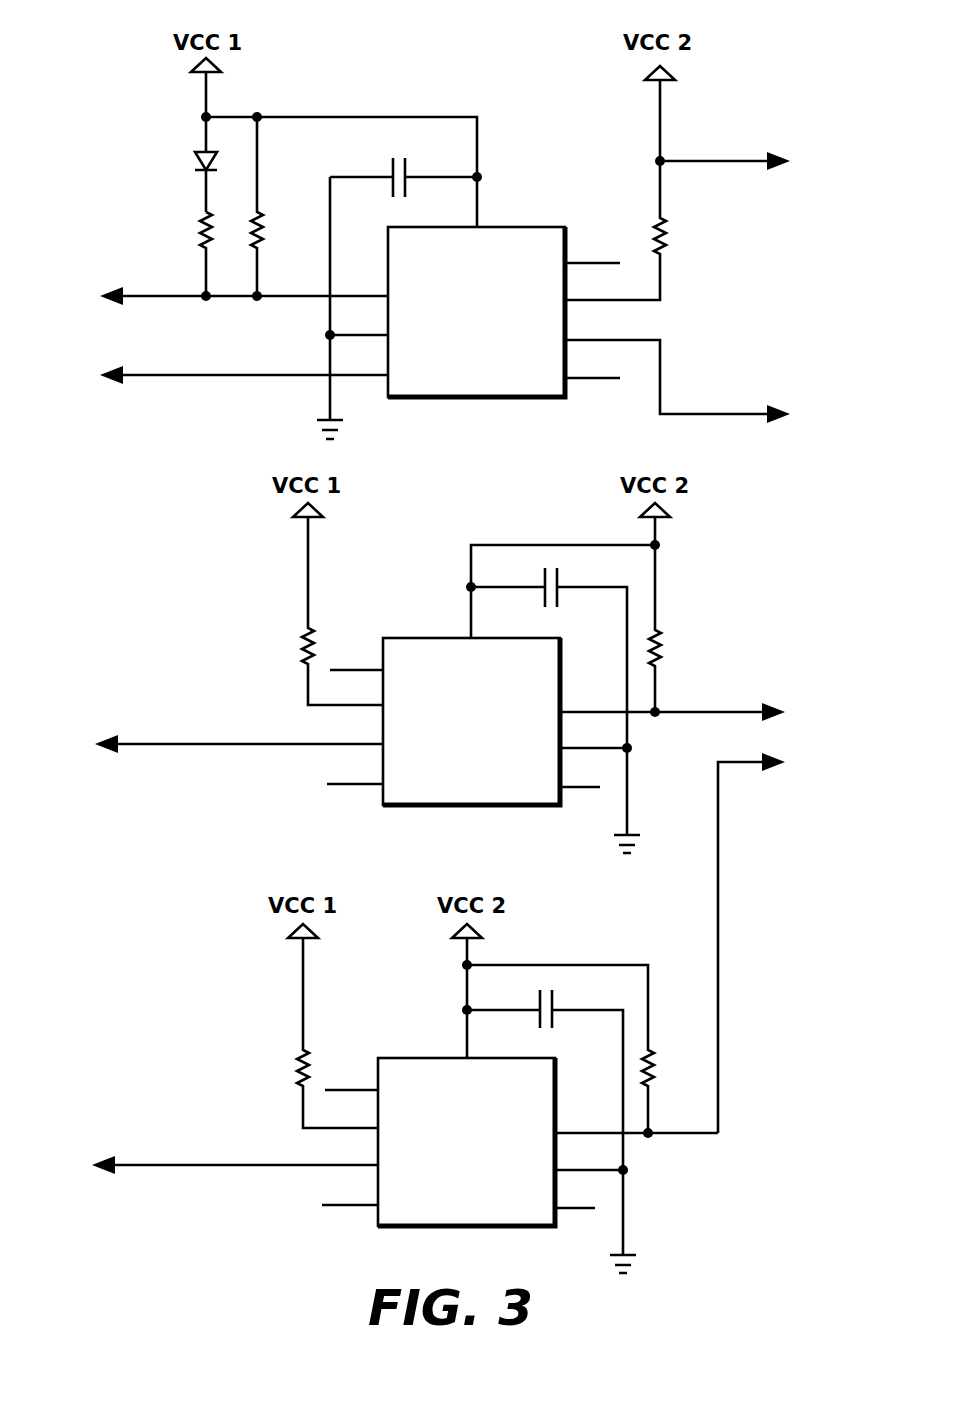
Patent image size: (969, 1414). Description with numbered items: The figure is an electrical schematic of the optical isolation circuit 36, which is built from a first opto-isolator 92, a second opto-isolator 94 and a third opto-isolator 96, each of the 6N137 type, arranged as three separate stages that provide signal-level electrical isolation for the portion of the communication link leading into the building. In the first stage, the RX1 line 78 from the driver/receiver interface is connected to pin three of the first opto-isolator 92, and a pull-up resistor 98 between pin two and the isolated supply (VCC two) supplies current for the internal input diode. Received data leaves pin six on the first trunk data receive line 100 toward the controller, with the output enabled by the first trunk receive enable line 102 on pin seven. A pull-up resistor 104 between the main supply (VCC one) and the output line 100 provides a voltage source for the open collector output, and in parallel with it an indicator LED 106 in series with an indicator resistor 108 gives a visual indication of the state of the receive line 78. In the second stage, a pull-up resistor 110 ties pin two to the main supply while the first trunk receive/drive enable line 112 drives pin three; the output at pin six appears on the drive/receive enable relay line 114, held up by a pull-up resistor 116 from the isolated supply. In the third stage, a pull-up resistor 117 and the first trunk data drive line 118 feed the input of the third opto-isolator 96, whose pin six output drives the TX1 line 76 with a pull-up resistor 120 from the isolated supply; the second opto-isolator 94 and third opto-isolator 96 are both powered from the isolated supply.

The optical isolation circuit 36 is at (536, 98).
The indicator LED 106 is at (196, 152).
The resistor 108 is at (199, 232).
The pull-up resistor 104 is at (259, 222).
The first trunk data receive line 100 is at (168, 292).
The first trunk receive enable line 102 is at (168, 378).
The first opto-isolator 92 is at (455, 367).
The pull-up resistor 98 is at (668, 238).
The RX1 line 78 is at (722, 412).
The pull-up resistor 110 is at (299, 650).
The first trunk receive/drive enable line 112 is at (178, 747).
The second opto-isolator 94 is at (448, 772).
The pull-up resistor 116 is at (663, 648).
The drive/receive enable relay line 114 is at (718, 712).
The TX1 line 76 is at (742, 765).
The pull-up resistor 117 is at (295, 1072).
The first trunk data drive line 118 is at (200, 1168).
The third opto-isolator 96 is at (490, 1215).
The pull-up resistor 120 is at (655, 1067).